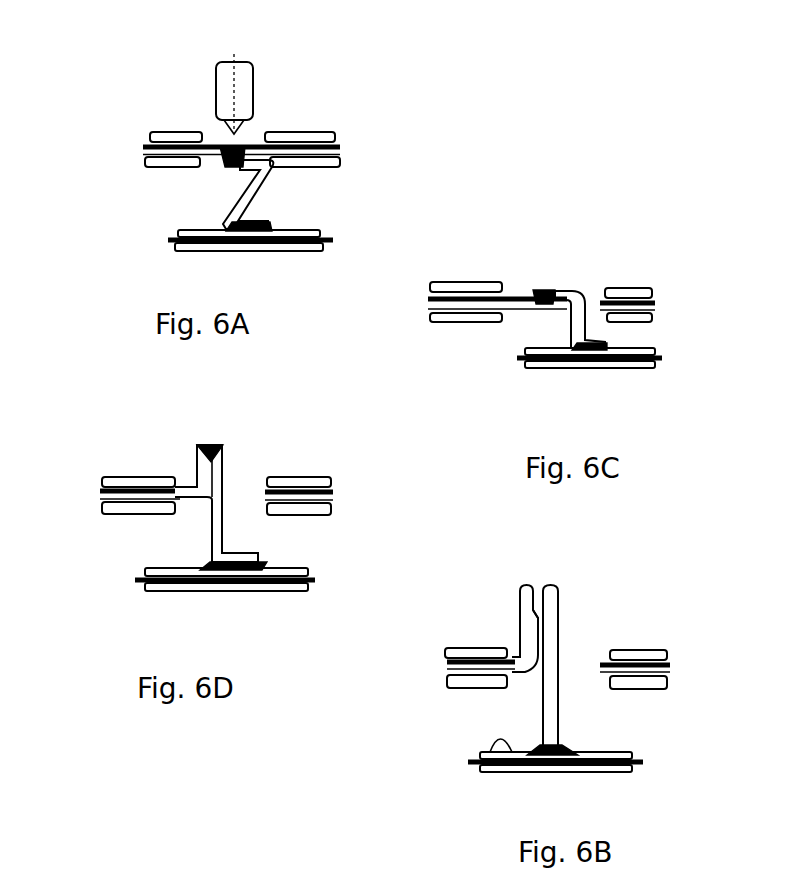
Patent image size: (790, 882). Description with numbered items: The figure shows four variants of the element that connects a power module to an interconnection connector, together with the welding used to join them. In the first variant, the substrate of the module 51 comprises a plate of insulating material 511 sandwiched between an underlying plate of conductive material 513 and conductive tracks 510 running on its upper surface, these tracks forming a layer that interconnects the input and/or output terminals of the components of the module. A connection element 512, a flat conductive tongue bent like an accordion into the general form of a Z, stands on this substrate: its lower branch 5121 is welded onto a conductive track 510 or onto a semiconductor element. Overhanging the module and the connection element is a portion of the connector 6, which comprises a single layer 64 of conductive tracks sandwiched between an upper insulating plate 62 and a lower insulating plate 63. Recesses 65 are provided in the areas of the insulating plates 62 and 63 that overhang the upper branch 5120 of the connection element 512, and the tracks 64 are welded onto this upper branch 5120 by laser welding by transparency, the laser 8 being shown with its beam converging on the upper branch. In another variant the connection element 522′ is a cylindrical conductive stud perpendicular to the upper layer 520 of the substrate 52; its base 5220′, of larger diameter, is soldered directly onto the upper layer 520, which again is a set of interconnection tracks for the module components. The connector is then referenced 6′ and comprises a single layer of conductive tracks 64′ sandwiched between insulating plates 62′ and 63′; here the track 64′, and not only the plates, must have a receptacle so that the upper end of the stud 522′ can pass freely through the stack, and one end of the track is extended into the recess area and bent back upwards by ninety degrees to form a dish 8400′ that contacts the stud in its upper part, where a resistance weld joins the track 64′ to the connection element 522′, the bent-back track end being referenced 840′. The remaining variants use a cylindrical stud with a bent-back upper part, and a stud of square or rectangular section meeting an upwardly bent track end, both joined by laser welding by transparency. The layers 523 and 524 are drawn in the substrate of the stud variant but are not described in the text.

In FIG. 6A, the connector 6 is at (240, 153).
In FIG. 6A, the upper insulating plate 62 is at (152, 133).
In FIG. 6A, the layer of conductive tracks 64 is at (145, 150).
In FIG. 6A, the lower insulating plate 63 is at (162, 168).
In FIG. 6A, the recesses 65 is at (268, 130).
In FIG. 6A, the laser 8 is at (286, 82).
In FIG. 6A, the substrate of the module 51 is at (305, 247).
In FIG. 6C, the substrate of the module 51 is at (530, 390).
In FIG. 6D, the substrate of the module 51 is at (180, 597).
In FIG. 6A, the conductive tracks 510 is at (299, 231).
In FIG. 6C, the conductive tracks 510 is at (525, 371).
In FIG. 6D, the conductive tracks 510 is at (173, 568).
In FIG. 6A, the plate of insulating material 511 is at (318, 244).
In FIG. 6C, the plate of insulating material 511 is at (570, 371).
In FIG. 6D, the plate of insulating material 511 is at (158, 592).
In FIG. 6A, the plate of conductive material 513 is at (282, 253).
In FIG. 6C, the plate of conductive material 513 is at (612, 371).
In FIG. 6D, the plate of conductive material 513 is at (180, 593).
In FIG. 6A, the connection element 512 is at (311, 209).
In FIG. 6A, the upper branch 5120 is at (231, 168).
In FIG. 6A, the lower branch 5121 is at (252, 233).
In FIG. 6B, the connector 6′ is at (483, 688).
In FIG. 6B, the insulating plate 62′ is at (470, 646).
In FIG. 6B, the conductive track 64′ is at (476, 668).
In FIG. 6B, the insulating plate 63′ is at (492, 691).
In FIG. 6B, the connection element 522′ is at (547, 659).
In FIG. 6B, the hook portion of pin 8400′ is at (521, 618).
In FIG. 6B, the bent portion of pin (first variant) 840′ is at (580, 660).
In FIG. 6B, the base 5220′ is at (561, 746).
In FIG. 6B, the substrate 52 is at (495, 791).
In FIG. 6B, the upper layer 520 is at (490, 761).
In FIG. 6B, the conductive layer of second circuit board (first variant) 523 is at (567, 775).
In FIG. 6B, the bottom layer of second circuit board (first variant) 524 is at (617, 775).